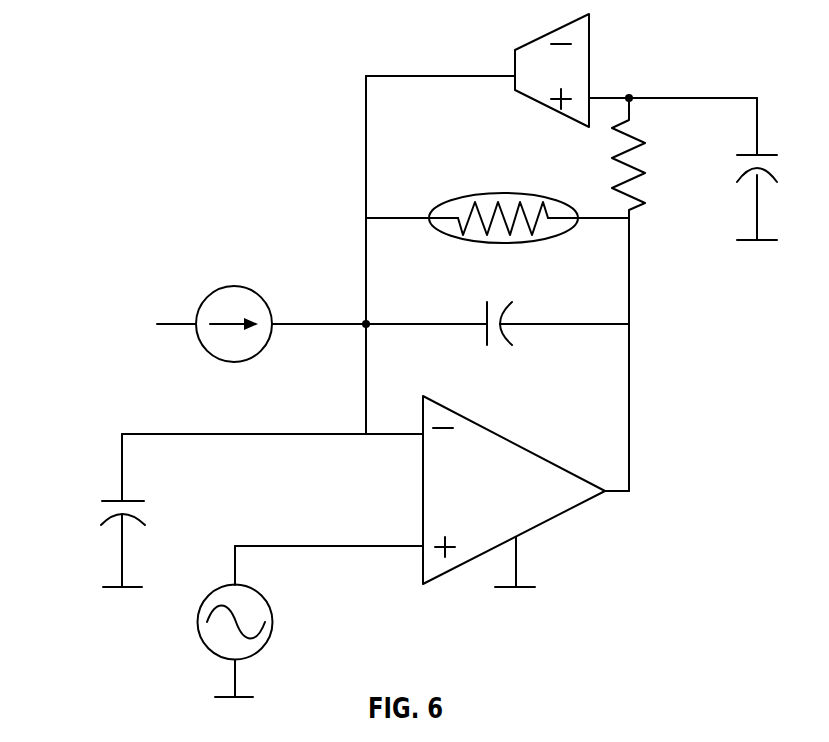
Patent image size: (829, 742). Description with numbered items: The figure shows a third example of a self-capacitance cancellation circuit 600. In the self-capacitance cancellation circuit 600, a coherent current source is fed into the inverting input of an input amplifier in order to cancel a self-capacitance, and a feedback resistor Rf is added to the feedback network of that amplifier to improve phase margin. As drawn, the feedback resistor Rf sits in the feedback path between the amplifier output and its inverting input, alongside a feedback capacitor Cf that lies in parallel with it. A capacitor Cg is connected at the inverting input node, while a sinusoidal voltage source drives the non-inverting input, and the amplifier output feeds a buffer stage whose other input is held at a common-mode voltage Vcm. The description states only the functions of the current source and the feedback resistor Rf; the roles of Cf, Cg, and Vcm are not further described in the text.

The self-capacitance cancellation circuit 600 is at (119, 113).
The common-mode voltage buffer amplifier Vcm is at (589, 44).
The feedback resistor Rf is at (503, 193).
The feedback capacitor Cf is at (493, 306).
The gate capacitor Cg is at (100, 504).